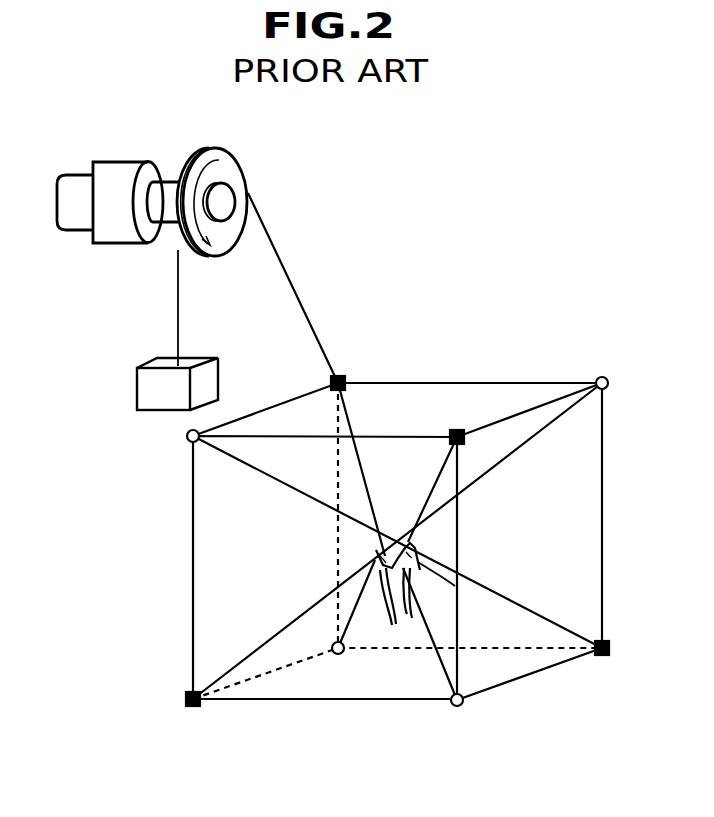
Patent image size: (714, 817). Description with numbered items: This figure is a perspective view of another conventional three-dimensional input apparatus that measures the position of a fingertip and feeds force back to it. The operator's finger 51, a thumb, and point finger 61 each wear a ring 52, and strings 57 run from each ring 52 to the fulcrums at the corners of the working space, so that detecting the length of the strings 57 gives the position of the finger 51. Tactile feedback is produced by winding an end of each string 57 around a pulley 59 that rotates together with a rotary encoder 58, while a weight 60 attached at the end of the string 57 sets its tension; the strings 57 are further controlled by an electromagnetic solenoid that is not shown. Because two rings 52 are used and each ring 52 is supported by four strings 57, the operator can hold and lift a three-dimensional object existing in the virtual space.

The rotary encoder 58 is at (122, 170).
The pulley 59 is at (220, 152).
The weight 60 is at (150, 390).
The strings 57 is at (348, 424).
The finger 51 is at (398, 575).
The ring 52 is at (378, 568).
The point finger 61 is at (455, 586).